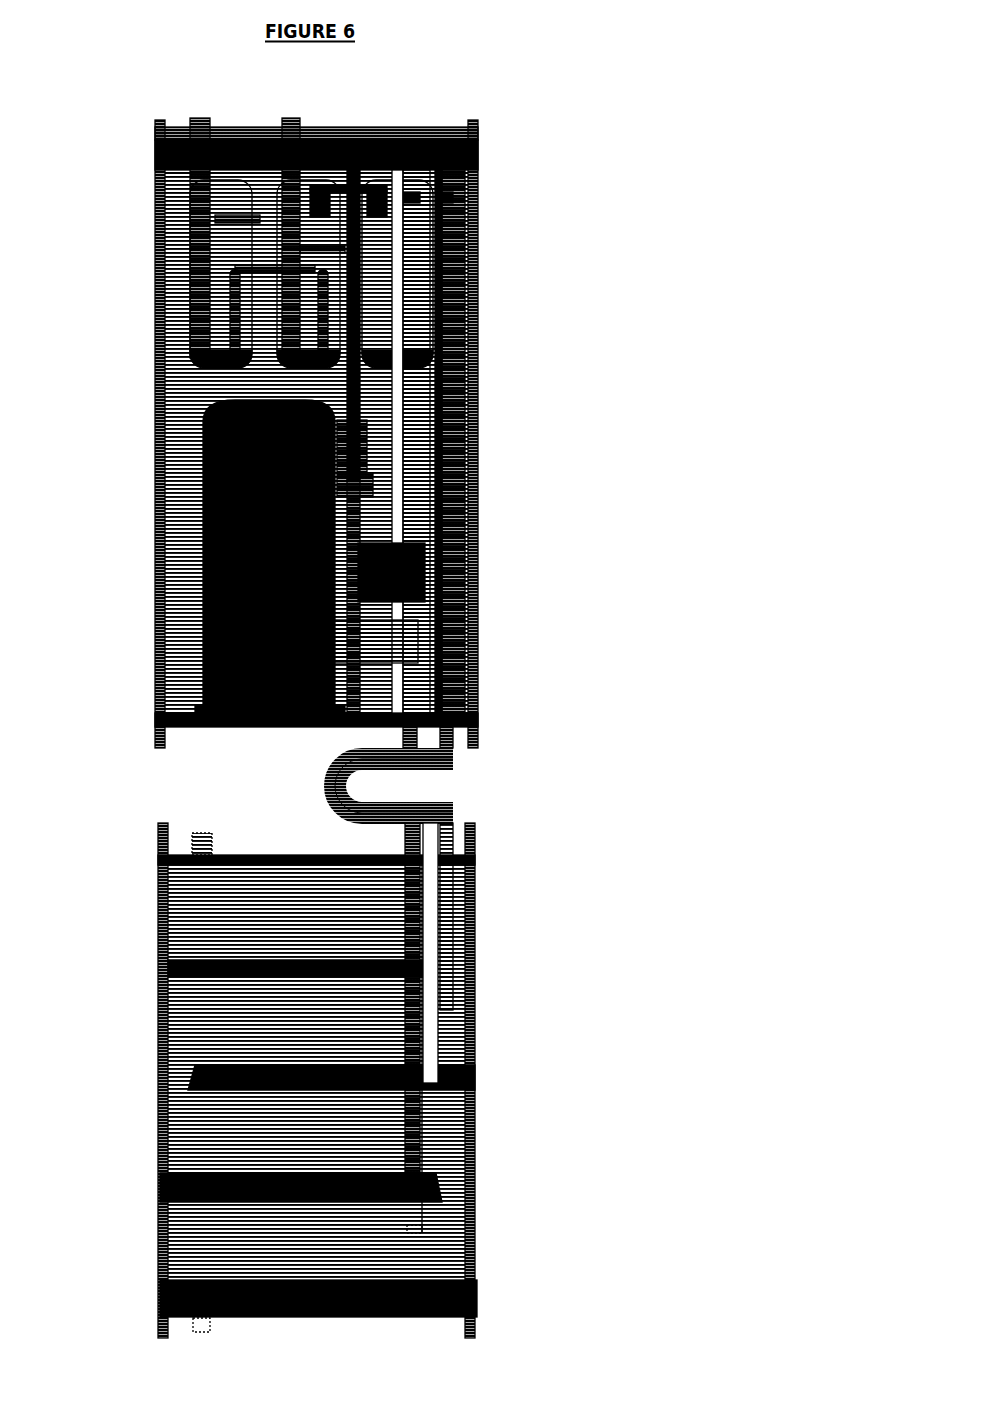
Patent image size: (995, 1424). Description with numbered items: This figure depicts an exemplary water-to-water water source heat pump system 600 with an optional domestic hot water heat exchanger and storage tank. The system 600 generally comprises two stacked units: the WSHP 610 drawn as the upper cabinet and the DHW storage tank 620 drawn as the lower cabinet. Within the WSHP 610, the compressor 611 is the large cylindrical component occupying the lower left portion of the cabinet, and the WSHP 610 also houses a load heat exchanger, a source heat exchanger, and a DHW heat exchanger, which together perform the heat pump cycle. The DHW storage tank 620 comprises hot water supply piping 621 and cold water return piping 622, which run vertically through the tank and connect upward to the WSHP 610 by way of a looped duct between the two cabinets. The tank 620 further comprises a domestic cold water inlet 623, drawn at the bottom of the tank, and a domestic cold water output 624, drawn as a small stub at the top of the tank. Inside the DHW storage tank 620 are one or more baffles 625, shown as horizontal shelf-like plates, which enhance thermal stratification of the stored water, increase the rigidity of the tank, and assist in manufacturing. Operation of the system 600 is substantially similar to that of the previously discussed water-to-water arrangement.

The water-to-water WSHP system 600 is at (563, 47).
The WSHP 610 is at (507, 738).
The compressor 611 is at (195, 587).
The DHW storage tank 620 is at (158, 850).
The hot water supply piping 621 is at (437, 1003).
The cold water return piping 622 is at (402, 1230).
The domestic cold water inlet 623 is at (208, 1335).
The domestic cold water output 624 is at (210, 826).
The baffles 625 is at (268, 1060).